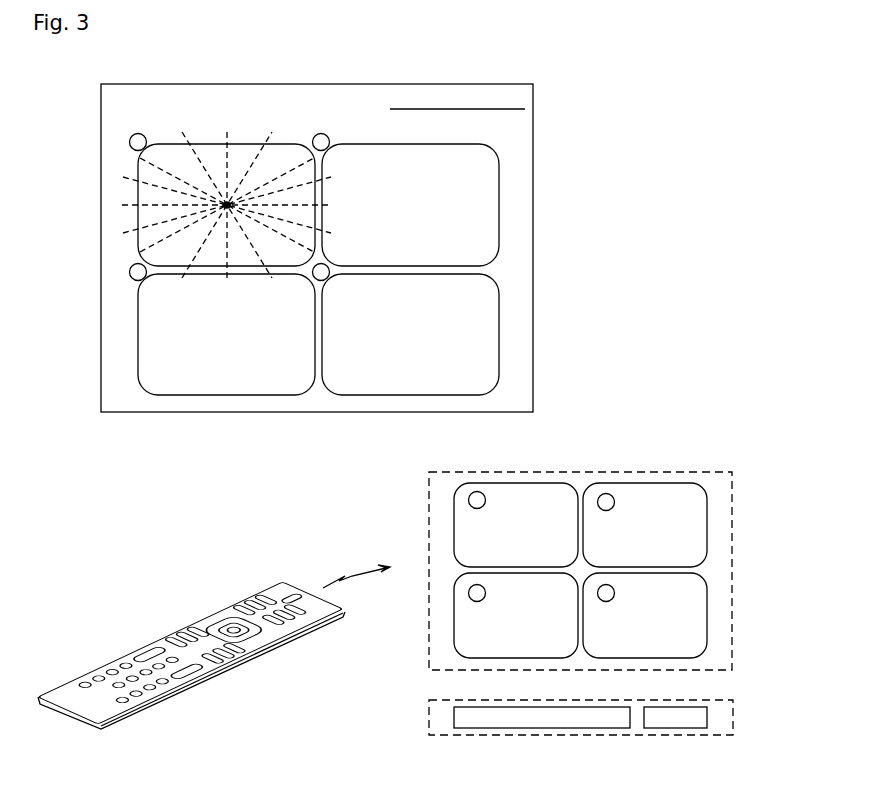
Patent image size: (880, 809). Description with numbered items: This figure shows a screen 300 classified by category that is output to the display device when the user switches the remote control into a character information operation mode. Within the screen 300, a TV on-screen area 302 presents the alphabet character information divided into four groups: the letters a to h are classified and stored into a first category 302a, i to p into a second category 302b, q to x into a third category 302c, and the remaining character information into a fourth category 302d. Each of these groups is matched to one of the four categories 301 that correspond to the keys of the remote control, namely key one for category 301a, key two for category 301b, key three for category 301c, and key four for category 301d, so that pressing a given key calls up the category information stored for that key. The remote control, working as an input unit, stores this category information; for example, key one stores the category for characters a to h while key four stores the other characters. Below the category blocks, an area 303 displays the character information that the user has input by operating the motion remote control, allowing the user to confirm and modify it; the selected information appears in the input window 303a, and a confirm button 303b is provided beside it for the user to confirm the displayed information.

The screen 300 is at (139, 60).
The TV on-screen character information area 302 is at (534, 268).
The category 1 of character information 302a is at (138, 210).
The category 2 of character information 302b is at (499, 205).
The category 3 of character information 302c is at (138, 337).
The category 4 of character information 302d is at (499, 335).
The categories 301 is at (604, 471).
The category 1 matching remote control key 1 301a is at (454, 525).
The category 2 matching remote control key 2 301b is at (707, 525).
The category 3 matching remote control key 3 301c is at (454, 616).
The category 4 matching remote control key 4 301d is at (707, 617).
The confirmation display area 303 is at (429, 716).
The input window 303a is at (543, 729).
The confirm button 303b is at (676, 729).